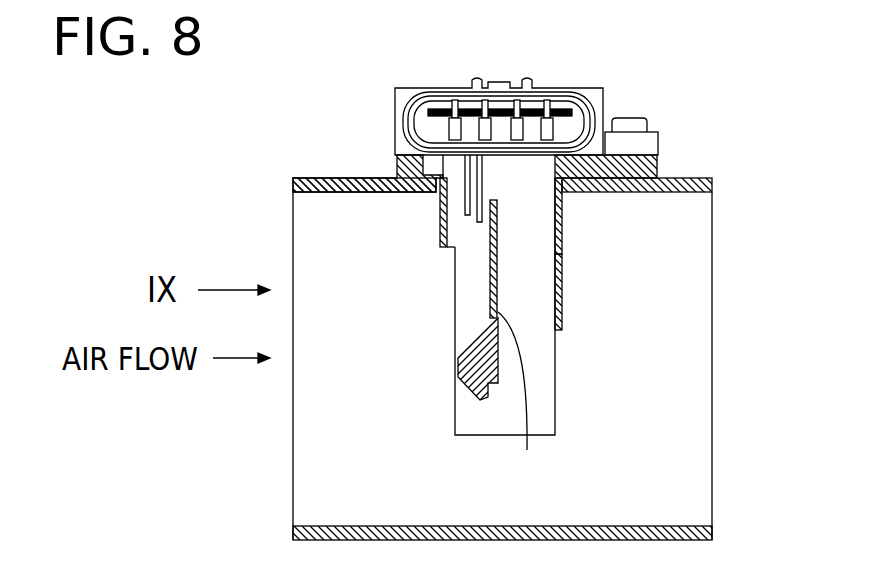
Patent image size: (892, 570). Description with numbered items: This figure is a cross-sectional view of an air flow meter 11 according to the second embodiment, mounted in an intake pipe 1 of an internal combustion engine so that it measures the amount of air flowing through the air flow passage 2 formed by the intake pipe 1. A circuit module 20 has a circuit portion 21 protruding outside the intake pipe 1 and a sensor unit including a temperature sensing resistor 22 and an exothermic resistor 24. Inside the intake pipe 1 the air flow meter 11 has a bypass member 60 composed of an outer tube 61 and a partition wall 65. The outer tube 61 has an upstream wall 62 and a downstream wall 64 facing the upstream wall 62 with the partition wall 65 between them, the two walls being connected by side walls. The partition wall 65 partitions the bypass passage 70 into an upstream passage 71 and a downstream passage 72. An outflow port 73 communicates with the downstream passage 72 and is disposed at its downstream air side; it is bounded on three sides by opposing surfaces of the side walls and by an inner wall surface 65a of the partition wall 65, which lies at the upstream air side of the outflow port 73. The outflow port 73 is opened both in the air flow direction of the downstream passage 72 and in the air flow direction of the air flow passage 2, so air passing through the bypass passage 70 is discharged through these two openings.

The intake pipe 1 is at (693, 178).
The air flow passage 2 is at (700, 216).
The air flow meter 11 is at (508, 245).
The circuit module 20 is at (486, 87).
The circuit portion 21 is at (408, 88).
The temperature sensing resistor 22 is at (467, 212).
The exothermic resistor 24 is at (480, 225).
The bypass member 60 is at (501, 295).
The outer tube 61 is at (565, 222).
The upstream wall 62 is at (440, 245).
The downstream wall 64 is at (565, 300).
The partition wall 65 is at (490, 288).
The inner wall surface 65a is at (530, 401).
The bypass passage 70 is at (624, 157).
The upstream passage 71 is at (457, 160).
The downstream passage 72 is at (532, 278).
The outflow port 73 is at (543, 358).